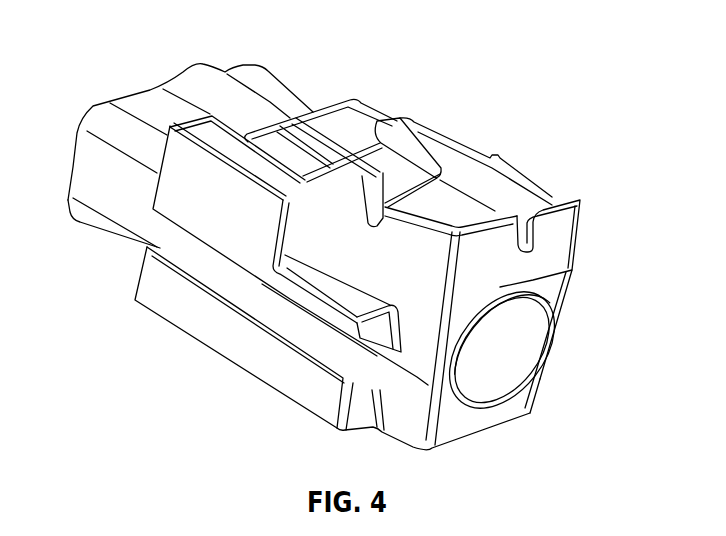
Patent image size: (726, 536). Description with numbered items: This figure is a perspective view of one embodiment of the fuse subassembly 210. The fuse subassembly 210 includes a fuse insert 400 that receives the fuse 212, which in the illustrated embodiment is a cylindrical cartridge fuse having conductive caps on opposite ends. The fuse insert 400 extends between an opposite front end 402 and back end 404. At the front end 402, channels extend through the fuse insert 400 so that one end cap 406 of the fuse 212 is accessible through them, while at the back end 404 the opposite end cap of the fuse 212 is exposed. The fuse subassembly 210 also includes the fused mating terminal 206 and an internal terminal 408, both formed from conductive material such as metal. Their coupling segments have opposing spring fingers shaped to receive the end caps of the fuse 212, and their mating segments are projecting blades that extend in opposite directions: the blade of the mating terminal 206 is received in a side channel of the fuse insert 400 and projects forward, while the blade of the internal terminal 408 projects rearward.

The fused mating terminal 206 is at (97, 231).
The fuse subassembly 210 is at (505, 117).
The fuse 212 is at (463, 408).
The fuse insert 400 is at (582, 200).
The front end 402 is at (567, 243).
The back end 404 is at (337, 104).
The end cap 406 is at (493, 393).
The internal terminal 408 is at (508, 163).